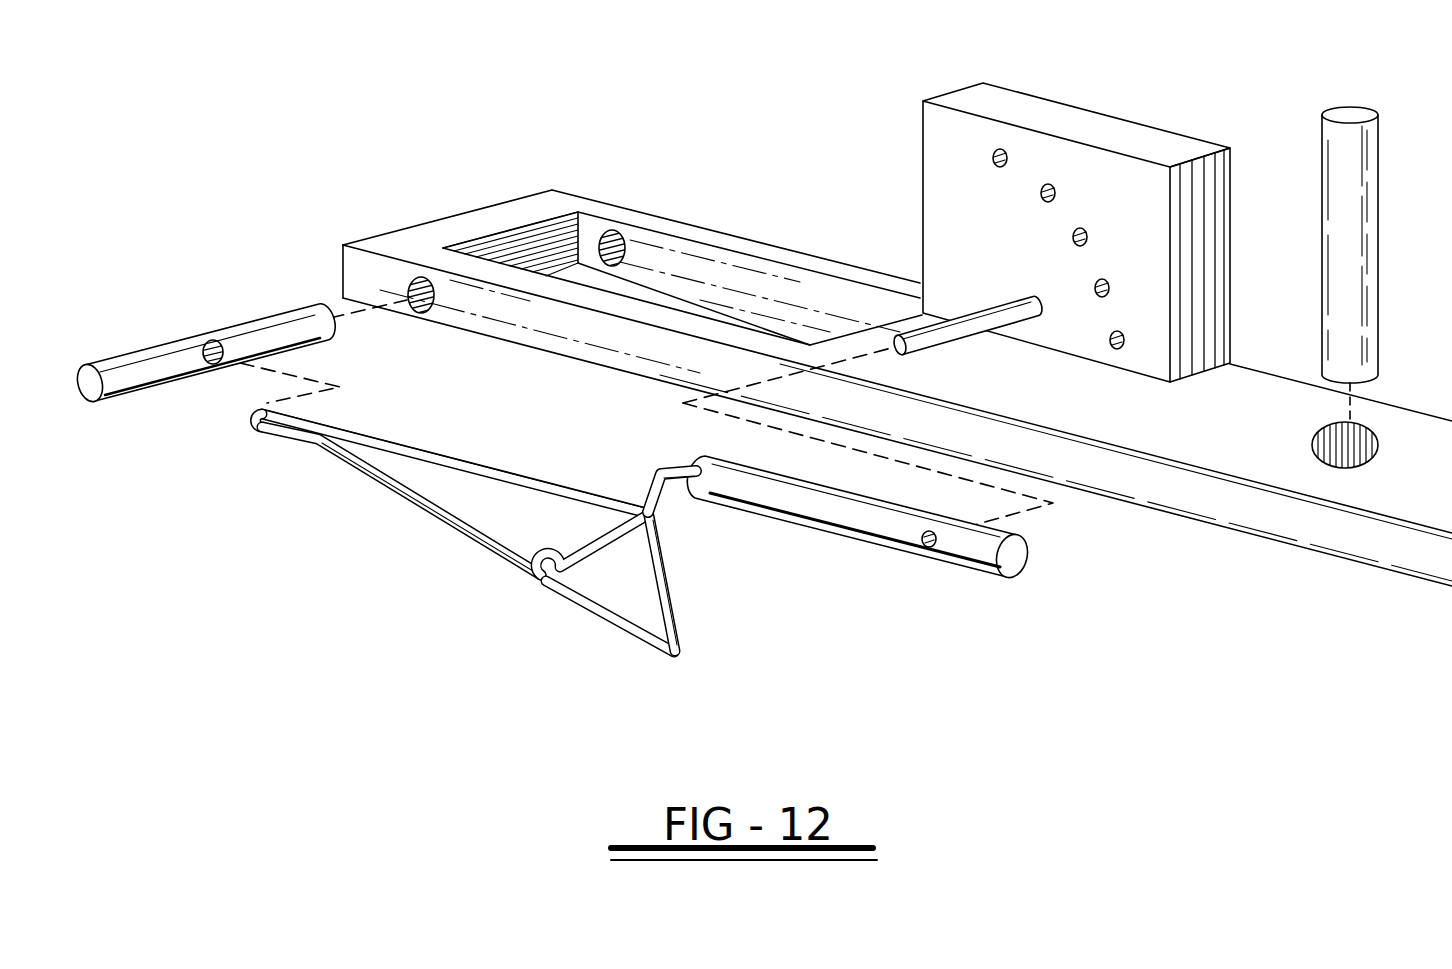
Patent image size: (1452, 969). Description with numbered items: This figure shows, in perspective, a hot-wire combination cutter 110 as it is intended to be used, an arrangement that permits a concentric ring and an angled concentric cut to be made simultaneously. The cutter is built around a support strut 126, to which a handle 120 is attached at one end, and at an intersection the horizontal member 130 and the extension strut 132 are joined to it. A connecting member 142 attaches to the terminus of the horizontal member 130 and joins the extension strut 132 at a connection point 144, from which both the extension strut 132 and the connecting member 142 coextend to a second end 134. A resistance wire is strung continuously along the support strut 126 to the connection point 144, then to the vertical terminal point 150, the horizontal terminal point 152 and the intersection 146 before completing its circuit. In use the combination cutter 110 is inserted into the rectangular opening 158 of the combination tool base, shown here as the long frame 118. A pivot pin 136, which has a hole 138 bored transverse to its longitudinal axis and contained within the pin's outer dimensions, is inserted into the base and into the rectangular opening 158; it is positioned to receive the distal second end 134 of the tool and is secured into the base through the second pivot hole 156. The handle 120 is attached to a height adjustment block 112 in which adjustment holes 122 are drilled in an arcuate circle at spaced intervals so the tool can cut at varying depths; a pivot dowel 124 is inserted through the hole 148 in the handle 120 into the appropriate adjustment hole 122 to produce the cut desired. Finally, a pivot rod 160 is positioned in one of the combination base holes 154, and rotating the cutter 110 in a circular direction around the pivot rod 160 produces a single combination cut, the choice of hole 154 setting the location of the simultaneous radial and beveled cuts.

The hot-wire combination cutter 110 is at (1189, 84).
The height adjustment block 112 is at (1108, 132).
The frame 118 is at (453, 214).
The handle 120 is at (982, 553).
The adjustment holes 122 is at (997, 160).
The pivot dowel 124 is at (958, 328).
The support strut 126 is at (643, 480).
The horizontal member 130 is at (672, 588).
The extension strut 132 is at (430, 448).
The second end 134 is at (250, 424).
The pivot pin 136 is at (125, 365).
The hole 138 is at (218, 338).
The connecting member 142 is at (430, 510).
The connection point 144 is at (323, 440).
The intersection 146 is at (660, 522).
The hole 148 is at (925, 546).
The vertical terminal point 150 is at (537, 556).
The horizontal terminal point 152 is at (678, 658).
The combination base holes 154 is at (1335, 451).
The second pivot hole 156 is at (623, 247).
The rectangular opening 158 is at (543, 246).
The pivot rod 160 is at (1348, 115).